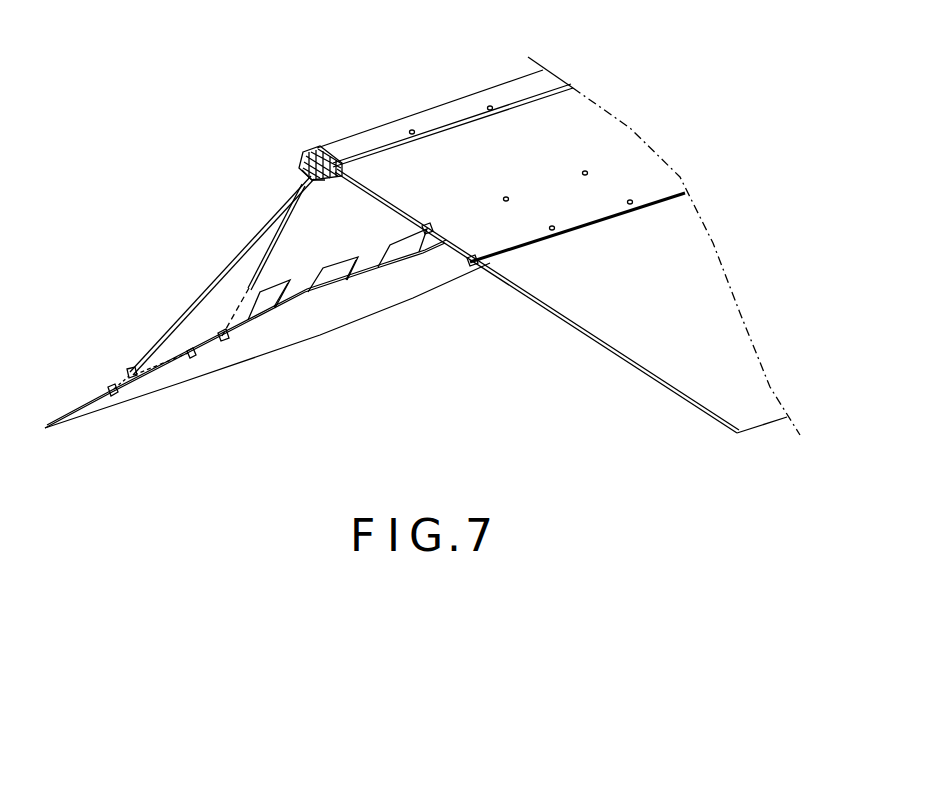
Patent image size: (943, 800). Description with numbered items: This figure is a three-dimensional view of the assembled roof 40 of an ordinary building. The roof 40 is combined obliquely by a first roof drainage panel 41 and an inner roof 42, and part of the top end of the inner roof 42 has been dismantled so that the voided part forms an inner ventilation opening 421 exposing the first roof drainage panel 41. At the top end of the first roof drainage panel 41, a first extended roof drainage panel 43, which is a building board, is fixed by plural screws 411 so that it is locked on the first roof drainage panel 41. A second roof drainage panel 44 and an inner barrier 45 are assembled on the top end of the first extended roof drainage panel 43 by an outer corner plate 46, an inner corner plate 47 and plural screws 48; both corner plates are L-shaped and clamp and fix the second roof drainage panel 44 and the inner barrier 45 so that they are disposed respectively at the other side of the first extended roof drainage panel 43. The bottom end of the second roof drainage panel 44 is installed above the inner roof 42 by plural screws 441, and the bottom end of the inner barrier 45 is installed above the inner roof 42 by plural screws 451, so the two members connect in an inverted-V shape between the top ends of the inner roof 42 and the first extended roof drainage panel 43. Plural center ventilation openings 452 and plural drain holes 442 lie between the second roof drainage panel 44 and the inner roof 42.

The roof 40 is at (718, 112).
The first roof drainage panel 41 is at (677, 307).
The screws 411 is at (632, 202).
The inner roof 42 is at (368, 298).
The inner ventilation opening 421 is at (428, 279).
The first extended roof drainage panel 43 is at (572, 147).
The second roof drainage panel 44 is at (218, 264).
The screws 441 is at (112, 392).
The drain holes 442 is at (153, 363).
The inner barrier 45 is at (272, 240).
The screws 451 is at (222, 340).
The center ventilation openings 452 is at (258, 308).
The outer corner plate 46 is at (385, 138).
The inner corner plate 47 is at (323, 165).
The screws 48 is at (330, 156).